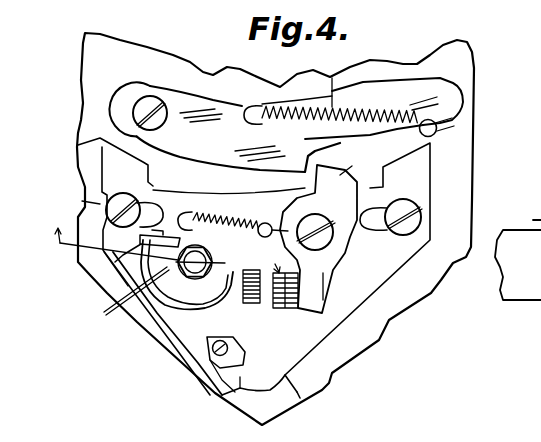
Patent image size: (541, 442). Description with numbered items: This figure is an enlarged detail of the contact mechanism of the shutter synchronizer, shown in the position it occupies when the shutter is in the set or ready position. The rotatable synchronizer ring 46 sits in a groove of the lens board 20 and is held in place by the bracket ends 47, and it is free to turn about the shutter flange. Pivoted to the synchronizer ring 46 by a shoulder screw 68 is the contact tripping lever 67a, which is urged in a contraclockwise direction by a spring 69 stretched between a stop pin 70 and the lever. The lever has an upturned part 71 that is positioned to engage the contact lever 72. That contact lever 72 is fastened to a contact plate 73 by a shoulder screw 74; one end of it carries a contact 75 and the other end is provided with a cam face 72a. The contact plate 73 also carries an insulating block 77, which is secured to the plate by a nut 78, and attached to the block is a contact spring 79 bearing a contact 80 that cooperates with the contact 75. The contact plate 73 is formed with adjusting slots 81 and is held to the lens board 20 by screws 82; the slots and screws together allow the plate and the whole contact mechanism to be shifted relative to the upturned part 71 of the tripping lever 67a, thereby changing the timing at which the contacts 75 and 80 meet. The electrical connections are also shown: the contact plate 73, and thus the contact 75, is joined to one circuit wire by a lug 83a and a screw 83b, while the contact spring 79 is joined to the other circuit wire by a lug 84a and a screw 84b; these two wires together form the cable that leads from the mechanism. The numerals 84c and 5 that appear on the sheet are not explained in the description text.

The synchronizer ring 46 is at (117, 53).
The bracket ends 47 is at (81, 140).
The contact tripping lever 67a is at (410, 108).
The shoulder screw 68 is at (144, 101).
The spring 69 is at (336, 79).
The stop pin 70 is at (440, 126).
The upturned part 71 is at (303, 168).
The contact lever 72 is at (352, 236).
The cam face 72a is at (362, 162).
The shoulder screw 74 is at (325, 251).
The adjusting slots 81 is at (148, 212).
The screws 82 is at (82, 201).
The screw 84b is at (181, 216).
The anchor 84c is at (524, 179).
The nut 78 is at (225, 263).
The section line 5 is at (162, 247).
The lug 84a is at (118, 302).
The insulating block 77 is at (128, 306).
The contact spring 79 is at (153, 330).
The contact 80 is at (250, 306).
The contact 75 is at (280, 312).
The contact plate 73 is at (290, 395).
The lens board 20 is at (423, 283).
The lug 83a is at (237, 408).
The screw 83b is at (210, 380).